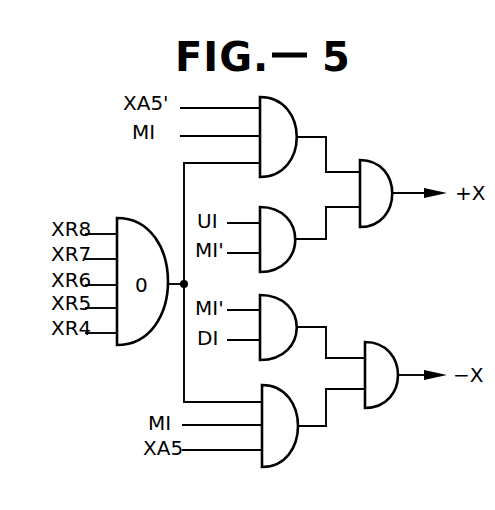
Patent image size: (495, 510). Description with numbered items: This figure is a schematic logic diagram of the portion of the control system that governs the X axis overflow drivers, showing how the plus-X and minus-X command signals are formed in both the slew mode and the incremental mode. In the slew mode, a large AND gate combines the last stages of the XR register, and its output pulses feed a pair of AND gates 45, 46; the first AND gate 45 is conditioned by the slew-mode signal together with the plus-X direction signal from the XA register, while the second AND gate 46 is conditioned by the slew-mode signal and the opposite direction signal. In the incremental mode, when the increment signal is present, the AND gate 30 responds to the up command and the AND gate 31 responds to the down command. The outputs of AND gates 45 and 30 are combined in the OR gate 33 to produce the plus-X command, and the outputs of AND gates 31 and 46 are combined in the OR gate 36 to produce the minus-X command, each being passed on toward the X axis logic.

The AND gate 45 is at (287, 113).
The AND gate 30 is at (291, 261).
The AND gate 31 is at (287, 301).
The AND gate 46 is at (290, 455).
The OR gate 33 is at (378, 163).
The OR gate 36 is at (383, 343).